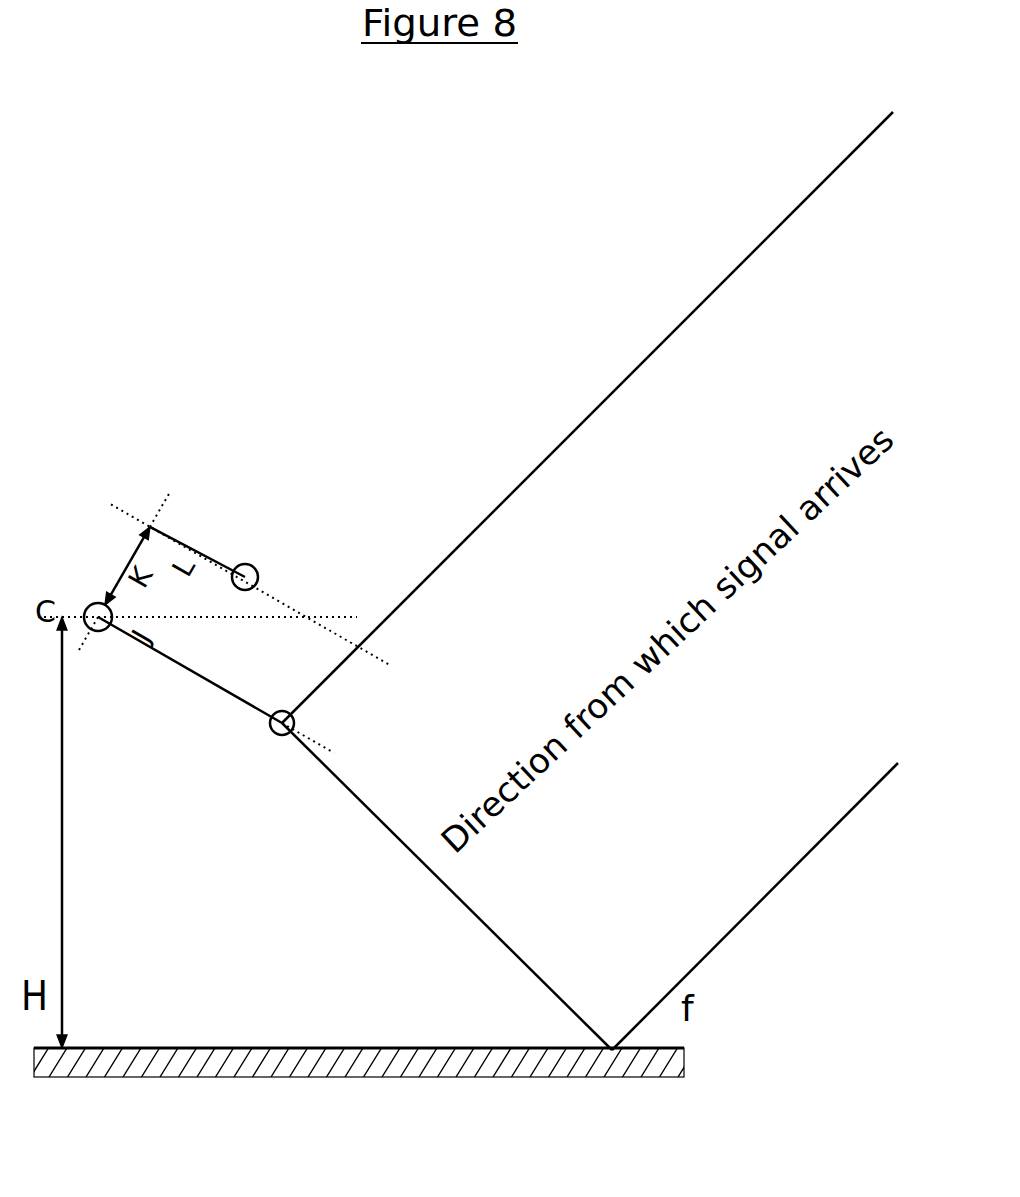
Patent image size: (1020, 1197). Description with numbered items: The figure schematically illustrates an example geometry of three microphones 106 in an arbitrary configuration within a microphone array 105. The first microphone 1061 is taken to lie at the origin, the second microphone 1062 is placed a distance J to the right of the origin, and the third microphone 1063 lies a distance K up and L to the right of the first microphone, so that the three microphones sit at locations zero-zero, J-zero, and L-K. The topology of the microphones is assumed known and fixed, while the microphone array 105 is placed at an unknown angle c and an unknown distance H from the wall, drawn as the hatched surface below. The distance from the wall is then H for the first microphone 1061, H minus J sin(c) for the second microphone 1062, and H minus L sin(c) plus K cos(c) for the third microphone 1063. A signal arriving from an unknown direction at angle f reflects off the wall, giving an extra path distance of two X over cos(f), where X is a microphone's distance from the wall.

The microphone array 105 is at (185, 1048).
The microphones 106 is at (185, 657).
The first microphone 1061 is at (88, 603).
The second microphone 1062 is at (278, 736).
The third microphone 1063 is at (258, 566).